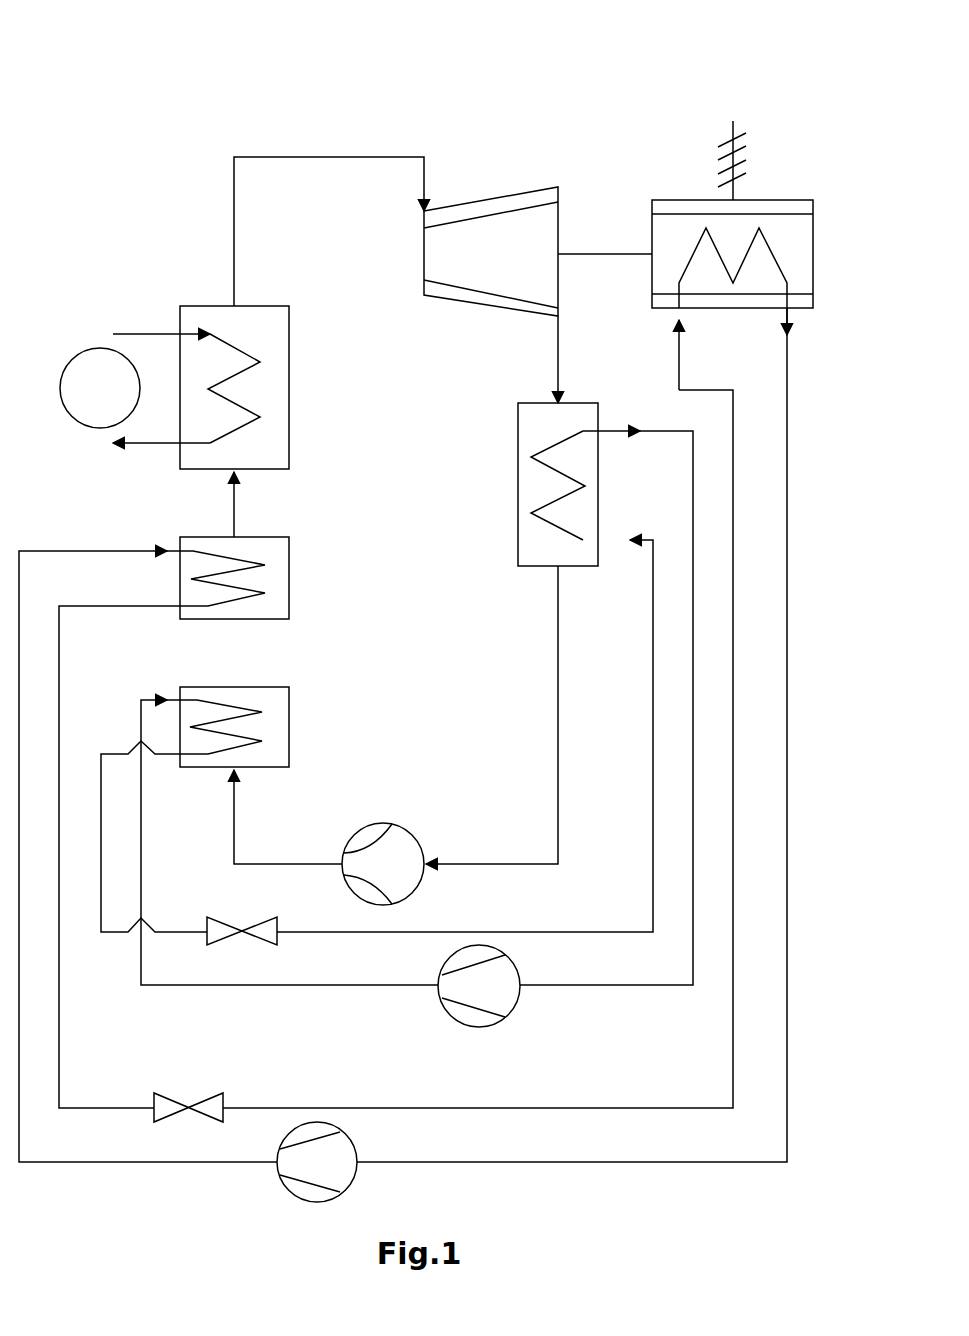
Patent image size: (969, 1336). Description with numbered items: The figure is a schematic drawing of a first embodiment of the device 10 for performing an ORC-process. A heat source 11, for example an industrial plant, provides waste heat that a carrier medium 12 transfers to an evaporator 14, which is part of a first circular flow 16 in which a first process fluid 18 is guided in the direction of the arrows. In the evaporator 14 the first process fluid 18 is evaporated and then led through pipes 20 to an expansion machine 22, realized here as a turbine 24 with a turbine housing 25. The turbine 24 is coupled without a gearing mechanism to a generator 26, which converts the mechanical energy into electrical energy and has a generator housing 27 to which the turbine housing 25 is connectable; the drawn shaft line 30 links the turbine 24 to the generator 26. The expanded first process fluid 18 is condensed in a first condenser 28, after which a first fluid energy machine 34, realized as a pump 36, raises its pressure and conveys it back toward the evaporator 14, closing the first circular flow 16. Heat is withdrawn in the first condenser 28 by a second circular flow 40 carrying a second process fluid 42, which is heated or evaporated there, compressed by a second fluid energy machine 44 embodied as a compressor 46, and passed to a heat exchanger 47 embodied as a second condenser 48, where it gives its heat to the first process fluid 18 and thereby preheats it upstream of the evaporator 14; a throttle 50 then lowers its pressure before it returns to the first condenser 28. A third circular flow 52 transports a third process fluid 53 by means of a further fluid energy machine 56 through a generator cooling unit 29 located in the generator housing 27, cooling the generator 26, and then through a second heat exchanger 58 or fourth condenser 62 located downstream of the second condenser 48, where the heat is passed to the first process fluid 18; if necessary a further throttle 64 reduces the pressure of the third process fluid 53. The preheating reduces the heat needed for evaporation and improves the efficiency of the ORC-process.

The device for performing an ORC-process 10 is at (108, 77).
The heat source 11 is at (100, 373).
The carrier medium 12 is at (128, 445).
The evaporator 14 is at (275, 389).
The first circular flow 16 is at (329, 175).
The first process fluid 18 is at (329, 175).
The pipes 20 is at (355, 157).
The expansion machine 22 is at (477, 198).
The turbine 24 is at (464, 226).
The turbine housing 25 is at (518, 198).
The generator 26 is at (785, 228).
The generator housing 27 is at (726, 186).
The generator cooling unit 29 is at (672, 208).
The first condenser 28 is at (518, 431).
The turbine outlet line 30 is at (610, 254).
The first fluid energy machine 34 is at (396, 735).
The pump 36 is at (410, 848).
The second circular flow 40 is at (465, 736).
The second process fluid 42 is at (538, 930).
The second fluid energy machine 44 is at (417, 729).
The compressor 46 is at (458, 962).
The heat exchanger 47 is at (257, 794).
The second condenser 48 is at (278, 700).
The throttle 50 is at (222, 930).
The third circular flow 52 is at (478, 714).
The third process fluid 53 is at (600, 1105).
The further fluid energy machine 56 is at (303, 1161).
The second heat exchanger 58 is at (246, 790).
The fourth condenser 62 is at (275, 550).
The further throttle 64 is at (208, 1105).